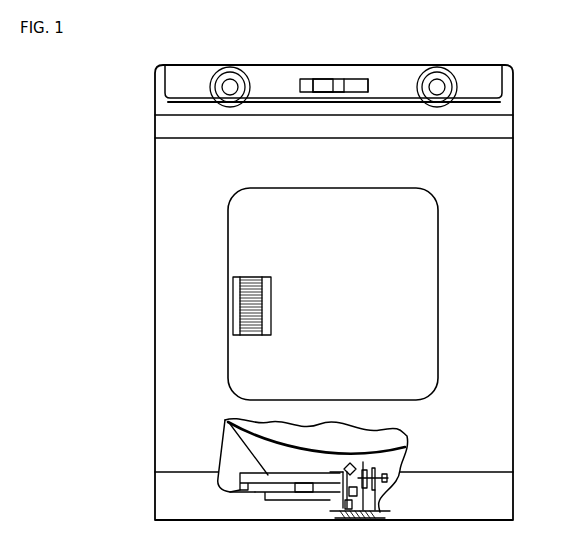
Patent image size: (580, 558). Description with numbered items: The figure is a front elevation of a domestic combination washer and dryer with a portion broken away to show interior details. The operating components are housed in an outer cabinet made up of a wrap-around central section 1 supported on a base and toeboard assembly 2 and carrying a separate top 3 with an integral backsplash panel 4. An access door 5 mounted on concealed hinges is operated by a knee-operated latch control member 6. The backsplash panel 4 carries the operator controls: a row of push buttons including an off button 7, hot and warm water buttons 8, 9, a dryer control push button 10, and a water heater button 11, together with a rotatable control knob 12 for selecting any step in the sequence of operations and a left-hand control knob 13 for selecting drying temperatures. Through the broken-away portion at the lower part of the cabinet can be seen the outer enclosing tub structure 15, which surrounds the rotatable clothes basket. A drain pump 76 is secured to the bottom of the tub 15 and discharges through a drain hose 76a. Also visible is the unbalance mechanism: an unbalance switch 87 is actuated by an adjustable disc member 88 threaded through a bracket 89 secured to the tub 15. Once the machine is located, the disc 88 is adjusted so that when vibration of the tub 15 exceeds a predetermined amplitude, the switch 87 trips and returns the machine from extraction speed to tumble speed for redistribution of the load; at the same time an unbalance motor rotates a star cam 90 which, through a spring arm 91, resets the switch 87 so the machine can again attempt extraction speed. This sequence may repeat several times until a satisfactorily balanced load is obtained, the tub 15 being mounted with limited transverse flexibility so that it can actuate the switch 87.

The wrap-around central section 1 is at (505, 315).
The base and toeboard assembly 2 is at (492, 500).
The top 3 is at (505, 114).
The backsplash panel 4 is at (387, 79).
The access door 5 is at (240, 244).
The knee-operated latch control member 6 is at (237, 311).
The off button 7 is at (307, 79).
The hot water button 8 is at (322, 92).
The warm water button 9 is at (330, 79).
The dryer control push button 10 is at (340, 92).
The water heater button 11 is at (354, 79).
The rotatable control knob 12 is at (437, 67).
The left-hand control knob 13 is at (232, 68).
The outer enclosing tub structure 15 is at (392, 437).
The drain pump 76 is at (288, 493).
The drain hose 76a is at (252, 493).
The unbalance switch 87 is at (380, 512).
The adjustable disc member 88 is at (398, 492).
The bracket 89 is at (390, 466).
The star cam 90 is at (351, 464).
The spring arm 91 is at (345, 518).